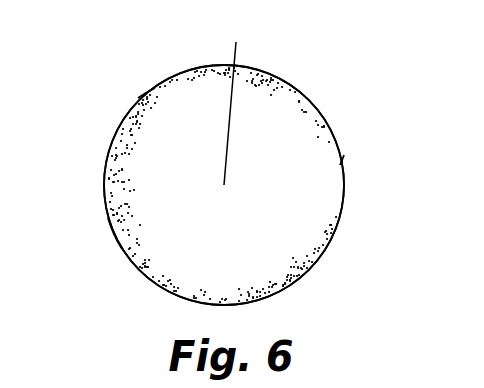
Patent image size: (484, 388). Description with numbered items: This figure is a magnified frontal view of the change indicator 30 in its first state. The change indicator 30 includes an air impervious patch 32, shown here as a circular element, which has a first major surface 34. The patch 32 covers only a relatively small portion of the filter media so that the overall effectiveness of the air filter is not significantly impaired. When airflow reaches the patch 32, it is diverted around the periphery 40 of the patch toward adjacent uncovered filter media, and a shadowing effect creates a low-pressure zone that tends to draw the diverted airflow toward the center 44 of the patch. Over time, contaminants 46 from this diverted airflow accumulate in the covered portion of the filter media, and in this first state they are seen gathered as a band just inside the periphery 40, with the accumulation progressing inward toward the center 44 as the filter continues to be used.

The change indicator 30 is at (331, 63).
The air impervious patch 32 is at (291, 232).
The first major surface 34 is at (322, 157).
The periphery 40 is at (146, 93).
The center 44 is at (237, 97).
The contaminants 46 is at (128, 244).